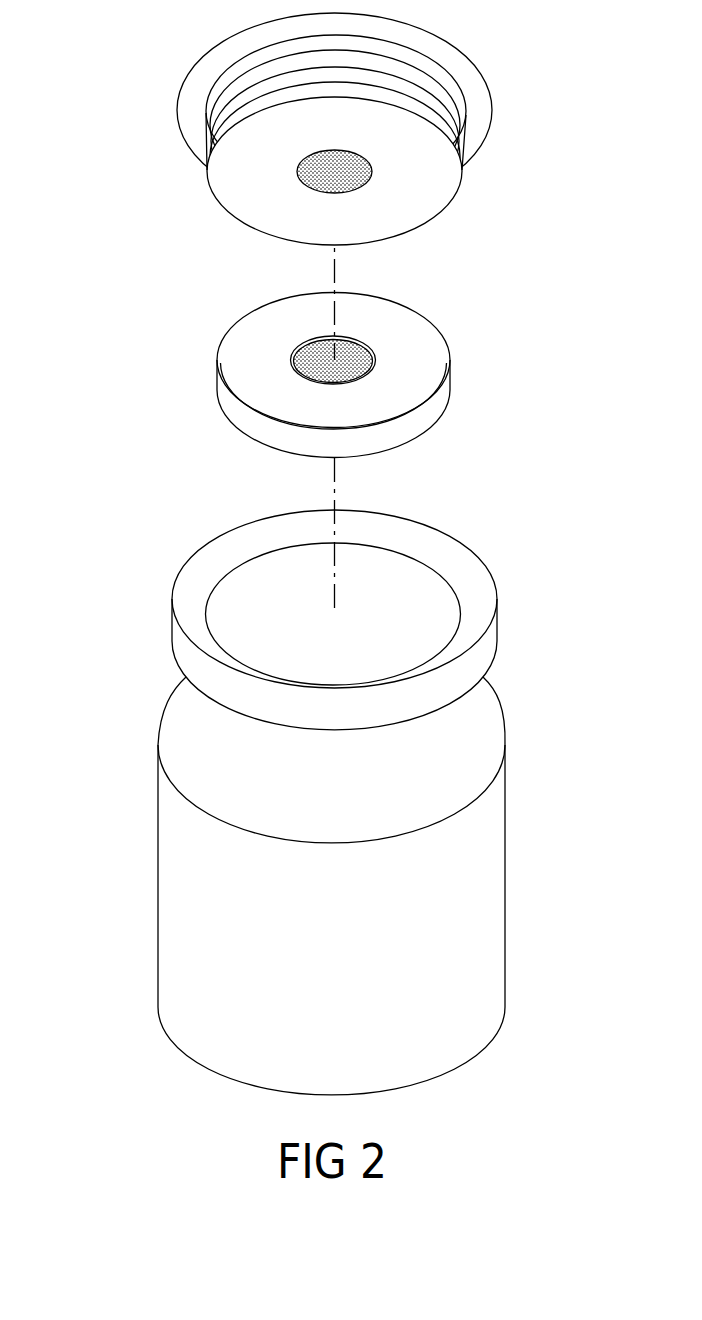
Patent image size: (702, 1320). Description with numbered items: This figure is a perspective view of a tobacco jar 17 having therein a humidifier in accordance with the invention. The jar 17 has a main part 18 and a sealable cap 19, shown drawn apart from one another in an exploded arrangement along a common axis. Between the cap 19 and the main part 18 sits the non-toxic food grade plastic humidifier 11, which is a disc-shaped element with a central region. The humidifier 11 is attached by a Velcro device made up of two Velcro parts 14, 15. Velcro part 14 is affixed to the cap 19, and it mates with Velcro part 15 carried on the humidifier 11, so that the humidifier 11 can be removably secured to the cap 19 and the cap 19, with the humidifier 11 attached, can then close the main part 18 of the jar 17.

The humidifier 11 is at (238, 360).
The Velcro part 14 is at (314, 173).
The Velcro part 15 is at (344, 356).
The tobacco jar 17 is at (110, 536).
The main part 18 is at (481, 903).
The sealable cap 19 is at (480, 81).